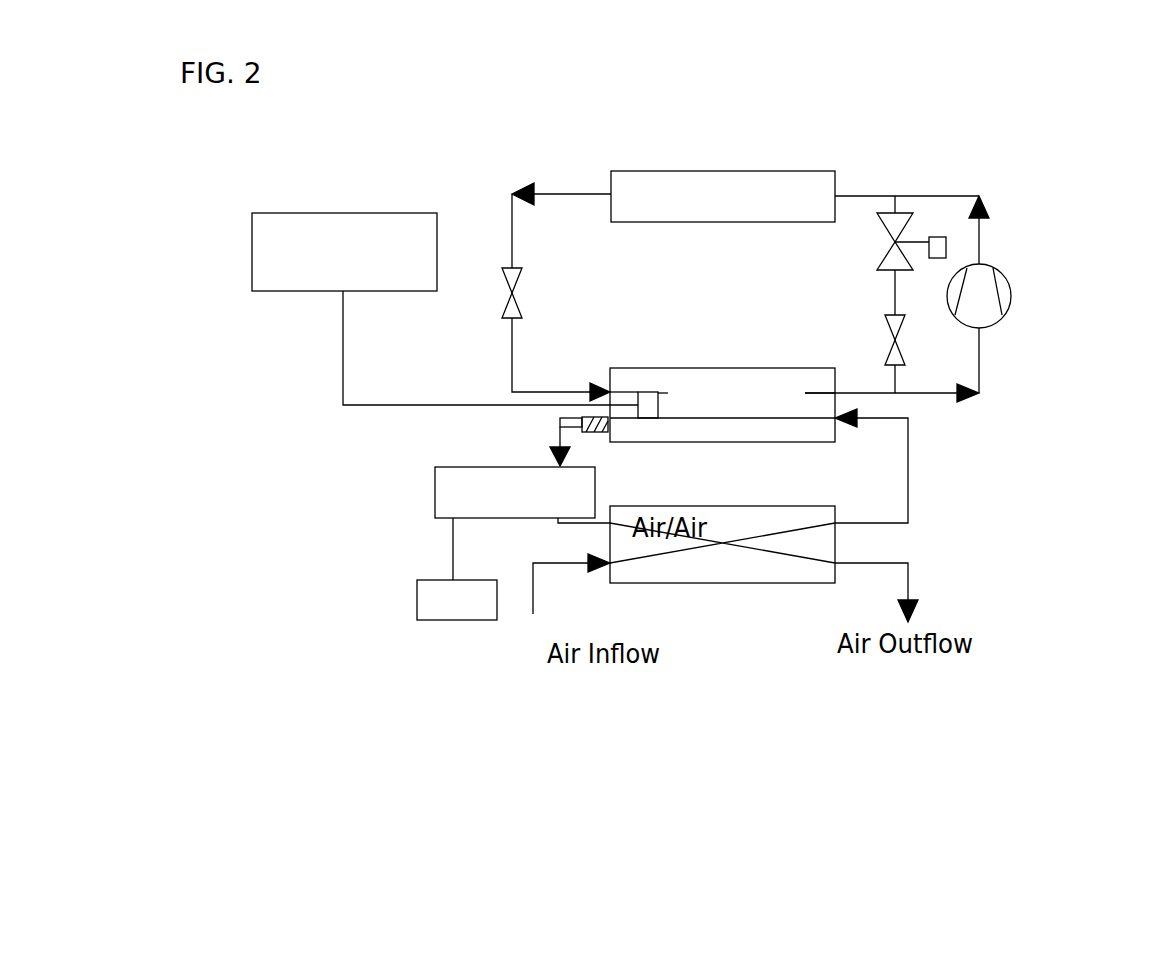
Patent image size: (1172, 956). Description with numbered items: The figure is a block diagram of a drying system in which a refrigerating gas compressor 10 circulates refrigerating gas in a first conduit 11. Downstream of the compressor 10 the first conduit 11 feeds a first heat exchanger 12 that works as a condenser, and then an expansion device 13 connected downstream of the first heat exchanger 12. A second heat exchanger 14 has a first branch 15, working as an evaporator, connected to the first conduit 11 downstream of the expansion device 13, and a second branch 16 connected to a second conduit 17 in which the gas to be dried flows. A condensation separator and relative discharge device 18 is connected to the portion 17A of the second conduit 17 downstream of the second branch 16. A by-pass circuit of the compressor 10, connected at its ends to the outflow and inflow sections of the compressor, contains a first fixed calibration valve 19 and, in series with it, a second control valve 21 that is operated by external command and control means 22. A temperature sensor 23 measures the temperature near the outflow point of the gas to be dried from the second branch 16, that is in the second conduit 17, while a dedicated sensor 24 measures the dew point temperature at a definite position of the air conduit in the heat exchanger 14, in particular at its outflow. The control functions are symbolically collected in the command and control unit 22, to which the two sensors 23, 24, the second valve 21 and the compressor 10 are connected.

The refrigerating gas compressor 10 is at (1003, 290).
The first conduit 11 is at (853, 195).
The first heat exchanger 12 is at (718, 182).
The expansion device 13 is at (517, 300).
The second heat exchanger 14 is at (627, 367).
The first branch 15 is at (818, 393).
The second branch 16 is at (787, 420).
The second conduit 17 is at (908, 488).
The portion of second conduit 17A is at (580, 523).
The condensation separator and discharge device 18 is at (452, 486).
The first fixed calibration valve 19 is at (917, 345).
The second control valve 21 is at (913, 225).
The command and control means 22 is at (343, 228).
The temperature sensor 23 is at (647, 405).
The dew point temperature sensor 24 is at (592, 426).